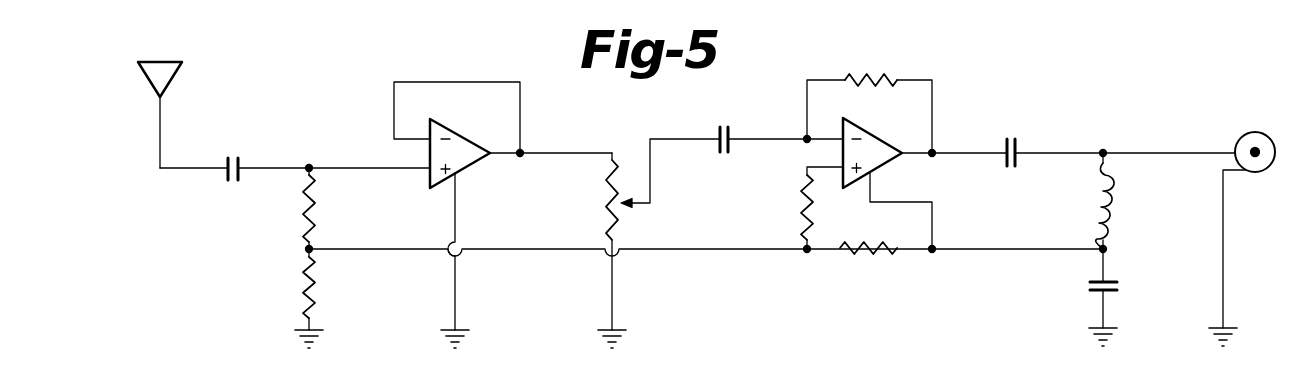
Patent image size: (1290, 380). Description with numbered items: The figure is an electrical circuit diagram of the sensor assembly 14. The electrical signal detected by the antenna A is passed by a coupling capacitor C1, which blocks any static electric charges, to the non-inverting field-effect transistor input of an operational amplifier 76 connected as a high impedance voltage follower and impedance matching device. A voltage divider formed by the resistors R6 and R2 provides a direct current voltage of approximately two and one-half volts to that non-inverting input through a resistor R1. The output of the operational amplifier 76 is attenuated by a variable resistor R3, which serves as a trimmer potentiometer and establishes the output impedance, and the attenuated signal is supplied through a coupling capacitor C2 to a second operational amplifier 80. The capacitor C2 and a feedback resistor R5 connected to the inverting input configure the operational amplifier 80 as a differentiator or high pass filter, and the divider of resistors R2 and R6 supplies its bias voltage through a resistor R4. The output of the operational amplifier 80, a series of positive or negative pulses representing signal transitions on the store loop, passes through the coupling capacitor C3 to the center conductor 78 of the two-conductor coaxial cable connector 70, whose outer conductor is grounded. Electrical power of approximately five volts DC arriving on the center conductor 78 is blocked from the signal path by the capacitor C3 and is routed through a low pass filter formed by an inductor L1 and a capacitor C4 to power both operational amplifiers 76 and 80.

The sensor assembly 14 is at (1035, 58).
The antenna A is at (162, 62).
The coupling capacitor C1 is at (238, 158).
The resistor R1 is at (302, 197).
The resistor R2 is at (300, 280).
The operational amplifier 76 is at (457, 136).
The variable resistor R3 is at (600, 192).
The coupling capacitor C2 is at (725, 127).
The second operational amplifier 80 is at (878, 147).
The feedback resistor R5 is at (873, 74).
The resistor R4 is at (800, 201).
The resistor R6 is at (871, 252).
The coupling capacitor C3 is at (1016, 139).
The inductor L1 is at (1110, 201).
The capacitor C4 is at (1108, 293).
The center conductor 78 is at (1255, 134).
The coaxial cable connector 70 is at (1271, 165).